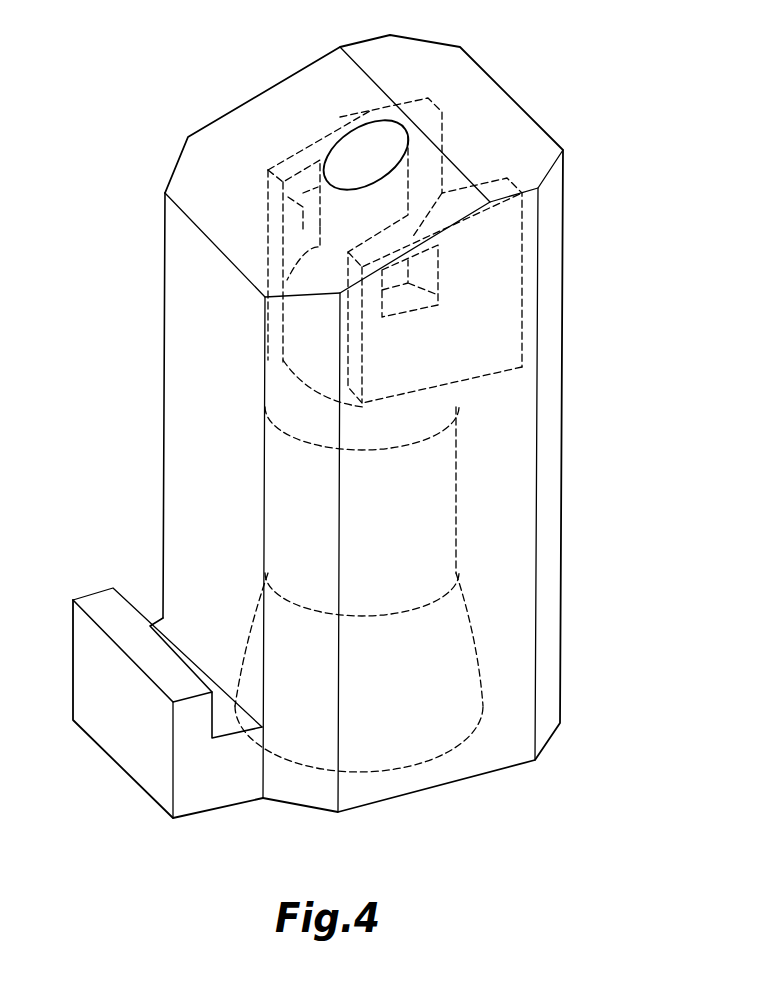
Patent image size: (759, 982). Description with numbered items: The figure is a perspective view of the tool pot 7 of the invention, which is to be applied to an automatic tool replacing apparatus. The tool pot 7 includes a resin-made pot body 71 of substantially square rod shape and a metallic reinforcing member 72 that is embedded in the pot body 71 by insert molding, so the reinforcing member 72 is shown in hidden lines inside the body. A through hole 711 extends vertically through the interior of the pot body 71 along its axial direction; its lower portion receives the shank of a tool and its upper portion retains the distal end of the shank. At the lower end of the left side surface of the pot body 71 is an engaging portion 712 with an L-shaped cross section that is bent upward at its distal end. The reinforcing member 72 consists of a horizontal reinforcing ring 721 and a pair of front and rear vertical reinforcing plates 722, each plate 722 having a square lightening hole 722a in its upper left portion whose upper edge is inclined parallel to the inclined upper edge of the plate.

The tool pot 7 is at (143, 362).
The pot body 71 is at (562, 598).
The through hole 711 is at (368, 147).
The engaging portion 712 is at (95, 602).
The reinforcing member 72 is at (519, 288).
The reinforcing ring 721 is at (268, 350).
The reinforcing plate 722 is at (440, 105).
The lightening hole 722a is at (265, 200).